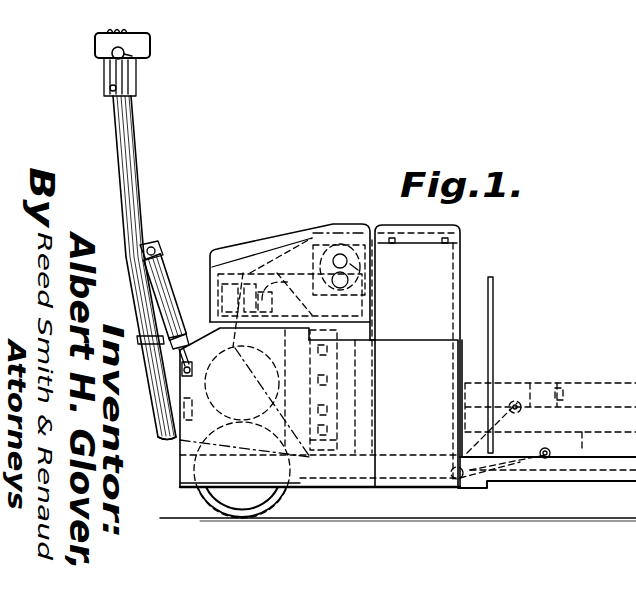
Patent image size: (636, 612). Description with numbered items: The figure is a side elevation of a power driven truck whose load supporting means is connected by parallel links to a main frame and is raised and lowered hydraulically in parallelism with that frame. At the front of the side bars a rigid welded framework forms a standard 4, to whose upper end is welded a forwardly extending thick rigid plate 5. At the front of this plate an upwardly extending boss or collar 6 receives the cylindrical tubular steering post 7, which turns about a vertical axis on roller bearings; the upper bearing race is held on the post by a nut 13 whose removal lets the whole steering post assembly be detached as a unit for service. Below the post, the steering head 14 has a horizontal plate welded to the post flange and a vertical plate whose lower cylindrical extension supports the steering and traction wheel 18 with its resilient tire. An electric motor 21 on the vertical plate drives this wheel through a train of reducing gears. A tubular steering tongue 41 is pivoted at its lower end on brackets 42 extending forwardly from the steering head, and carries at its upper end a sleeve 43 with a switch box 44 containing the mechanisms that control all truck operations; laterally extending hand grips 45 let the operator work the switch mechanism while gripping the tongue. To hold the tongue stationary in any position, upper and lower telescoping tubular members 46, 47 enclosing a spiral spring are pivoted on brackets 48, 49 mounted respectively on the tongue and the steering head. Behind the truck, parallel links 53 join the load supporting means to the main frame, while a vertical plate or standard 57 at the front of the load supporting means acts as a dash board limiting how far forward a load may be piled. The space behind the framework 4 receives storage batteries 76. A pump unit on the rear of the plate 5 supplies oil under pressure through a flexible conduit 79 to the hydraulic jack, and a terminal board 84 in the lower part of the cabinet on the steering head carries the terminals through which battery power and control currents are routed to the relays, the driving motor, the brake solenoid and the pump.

The standard 4 is at (455, 287).
The thick rigid plate 5 is at (314, 390).
The boss or collar 6 is at (268, 300).
The steering post 7 is at (280, 268).
The nut 13 is at (222, 281).
The steering head 14 is at (180, 478).
The steering and traction wheel 18 is at (203, 502).
The electric motor 21 is at (306, 400).
The tubular steering tongue 41 is at (135, 214).
The brackets 42 is at (170, 432).
The sleeve 43 is at (109, 86).
The switch box 44 is at (100, 47).
The hand grips 45 is at (124, 58).
The upper telescoping tubular member 46 is at (163, 278).
The lower telescoping tubular member 47 is at (178, 338).
The bracket 48 is at (156, 249).
The bracket 49 is at (203, 377).
The parallel links 53 is at (538, 420).
The vertical plate or standard 57 is at (495, 345).
The storage batteries 76 is at (437, 275).
The flexible conduit 79 is at (376, 385).
The terminal board 84 is at (328, 436).